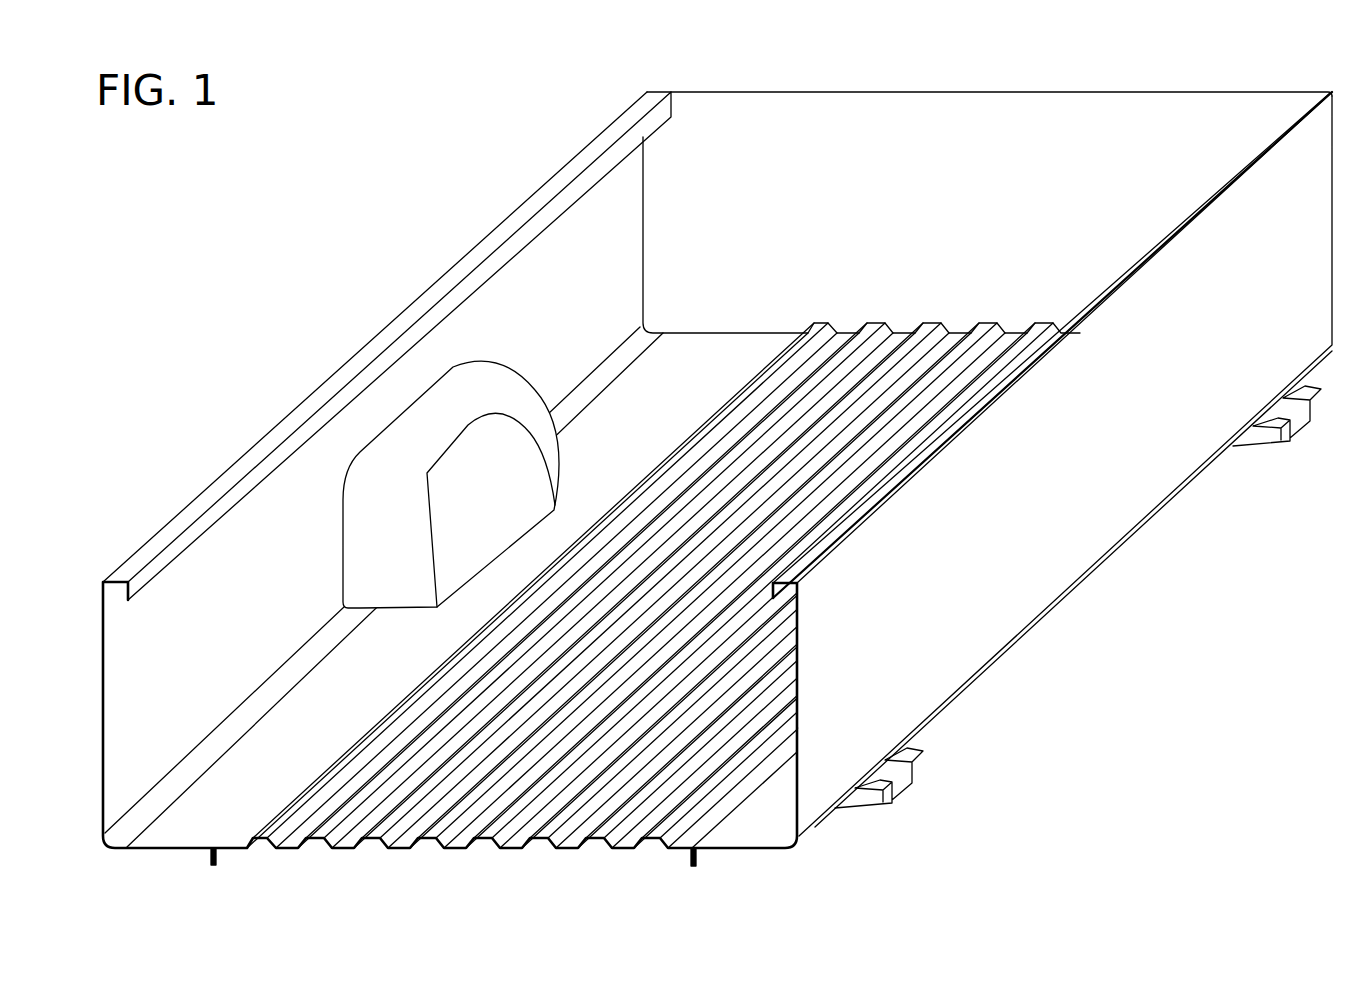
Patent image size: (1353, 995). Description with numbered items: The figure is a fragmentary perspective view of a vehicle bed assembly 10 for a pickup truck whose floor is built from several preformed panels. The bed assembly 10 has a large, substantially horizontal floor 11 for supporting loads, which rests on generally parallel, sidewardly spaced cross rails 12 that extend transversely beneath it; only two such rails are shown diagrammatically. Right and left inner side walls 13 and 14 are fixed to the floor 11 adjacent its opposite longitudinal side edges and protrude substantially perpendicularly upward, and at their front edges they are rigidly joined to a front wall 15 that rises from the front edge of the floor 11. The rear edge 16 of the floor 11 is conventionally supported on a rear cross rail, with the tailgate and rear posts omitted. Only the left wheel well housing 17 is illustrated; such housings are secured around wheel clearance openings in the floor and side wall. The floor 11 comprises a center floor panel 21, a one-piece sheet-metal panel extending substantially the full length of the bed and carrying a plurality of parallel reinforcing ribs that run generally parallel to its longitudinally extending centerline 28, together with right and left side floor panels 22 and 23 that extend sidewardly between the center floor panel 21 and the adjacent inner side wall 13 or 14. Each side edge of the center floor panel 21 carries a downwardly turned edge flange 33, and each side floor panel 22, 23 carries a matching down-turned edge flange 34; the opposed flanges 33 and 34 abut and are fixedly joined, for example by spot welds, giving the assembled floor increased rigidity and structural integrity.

The vehicle bed assembly 10 is at (325, 283).
The floor 11 is at (870, 322).
The cross rail 12 is at (895, 804).
The right inner side wall 13 is at (960, 595).
The left inner side wall 14 is at (135, 647).
The front wall 15 is at (710, 122).
The rear edge 16 is at (293, 849).
The wheel well housing 17 is at (448, 475).
The center floor panel 21 is at (556, 852).
The right side floor panel 22 is at (782, 828).
The left side floor panel 23 is at (156, 838).
The longitudinally extending centerline 28 is at (445, 856).
The downwardly turned edge flange 33 is at (218, 864).
The down-turned edge flange 34 is at (210, 858).